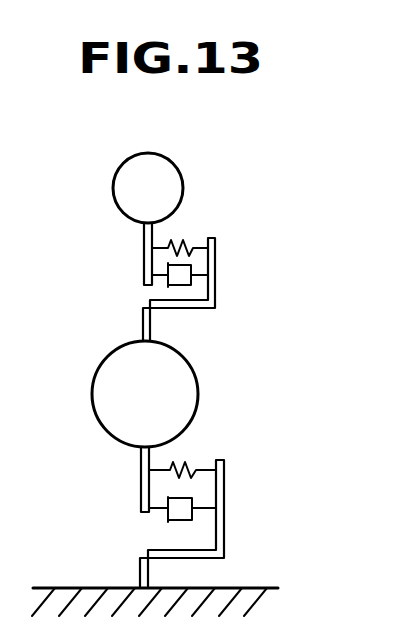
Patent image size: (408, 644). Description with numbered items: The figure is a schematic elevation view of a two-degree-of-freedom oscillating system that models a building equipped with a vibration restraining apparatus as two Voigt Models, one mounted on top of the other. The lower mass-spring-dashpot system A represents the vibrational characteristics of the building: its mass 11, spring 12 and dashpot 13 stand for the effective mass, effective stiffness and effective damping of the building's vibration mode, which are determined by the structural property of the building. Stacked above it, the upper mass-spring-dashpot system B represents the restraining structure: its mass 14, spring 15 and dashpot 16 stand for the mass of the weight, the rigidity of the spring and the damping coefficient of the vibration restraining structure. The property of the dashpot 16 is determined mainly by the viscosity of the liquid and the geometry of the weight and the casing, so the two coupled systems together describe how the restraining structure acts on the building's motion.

The mass 11 is at (182, 390).
The spring 12 is at (190, 461).
The dashpot 13 is at (177, 523).
The mass 14 is at (167, 173).
The spring 15 is at (185, 243).
The dashpot 16 is at (180, 285).
The mass-spring-dashpot system A is at (300, 345).
The mass-spring-dashpot system B is at (302, 157).